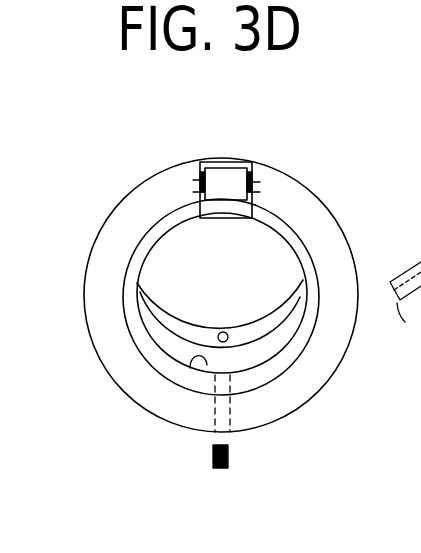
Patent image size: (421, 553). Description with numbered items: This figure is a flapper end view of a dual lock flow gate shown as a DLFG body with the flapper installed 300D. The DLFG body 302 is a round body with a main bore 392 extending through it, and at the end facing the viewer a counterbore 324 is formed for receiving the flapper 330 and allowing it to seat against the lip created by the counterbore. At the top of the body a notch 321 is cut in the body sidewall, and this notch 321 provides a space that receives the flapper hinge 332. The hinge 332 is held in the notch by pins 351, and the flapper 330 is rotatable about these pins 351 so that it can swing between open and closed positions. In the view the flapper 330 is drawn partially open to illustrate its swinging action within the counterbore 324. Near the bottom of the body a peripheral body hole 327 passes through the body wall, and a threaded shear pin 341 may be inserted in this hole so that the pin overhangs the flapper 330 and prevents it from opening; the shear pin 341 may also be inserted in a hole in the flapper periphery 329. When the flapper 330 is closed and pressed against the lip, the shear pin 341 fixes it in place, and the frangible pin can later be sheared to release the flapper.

The DLFG body with flapper installed 300D is at (72, 141).
The DLFG body 302 is at (83, 311).
The notch 321 is at (212, 160).
The flapper hinge 332 is at (222, 180).
The pins 351 is at (193, 185).
The flapper 330 is at (263, 252).
The counterbore 324 is at (287, 352).
The flapper periphery 329 is at (215, 337).
The main bore 392 is at (207, 365).
The peripheral body hole 327 is at (228, 427).
The threaded shear pin 341 is at (232, 455).